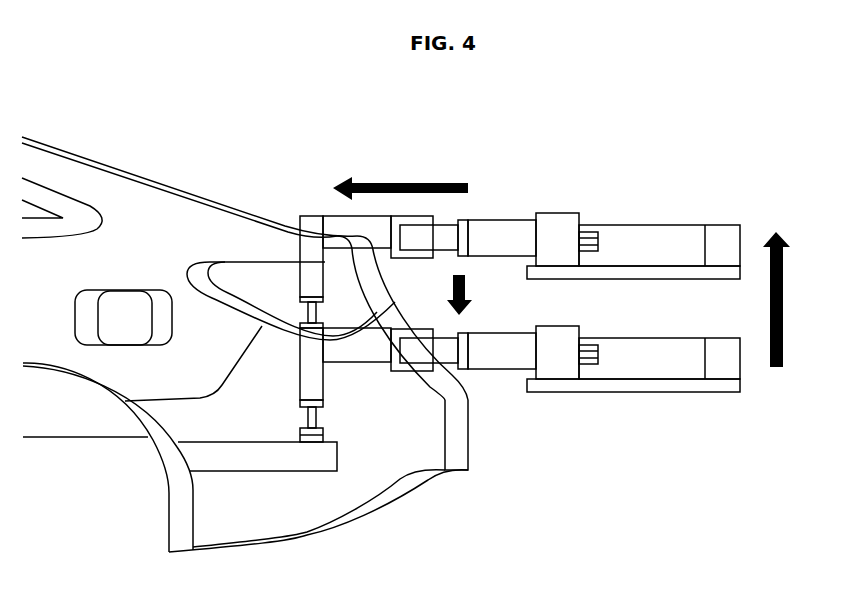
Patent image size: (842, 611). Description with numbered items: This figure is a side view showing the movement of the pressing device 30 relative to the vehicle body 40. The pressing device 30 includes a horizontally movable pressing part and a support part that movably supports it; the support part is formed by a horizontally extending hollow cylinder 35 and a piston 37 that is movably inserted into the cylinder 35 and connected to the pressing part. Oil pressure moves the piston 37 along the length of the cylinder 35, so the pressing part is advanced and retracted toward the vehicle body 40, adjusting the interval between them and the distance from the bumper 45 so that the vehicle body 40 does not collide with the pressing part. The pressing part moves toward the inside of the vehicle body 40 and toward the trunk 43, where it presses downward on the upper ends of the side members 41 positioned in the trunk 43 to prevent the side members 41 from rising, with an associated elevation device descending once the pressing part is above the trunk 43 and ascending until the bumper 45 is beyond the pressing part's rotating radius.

The pressing device 30 is at (308, 245).
The cylinder 35 is at (503, 360).
The piston 37 is at (445, 356).
The vehicle body 40 is at (113, 190).
The side members 41 is at (307, 462).
The trunk 43 is at (392, 463).
The bumper 45 is at (457, 462).